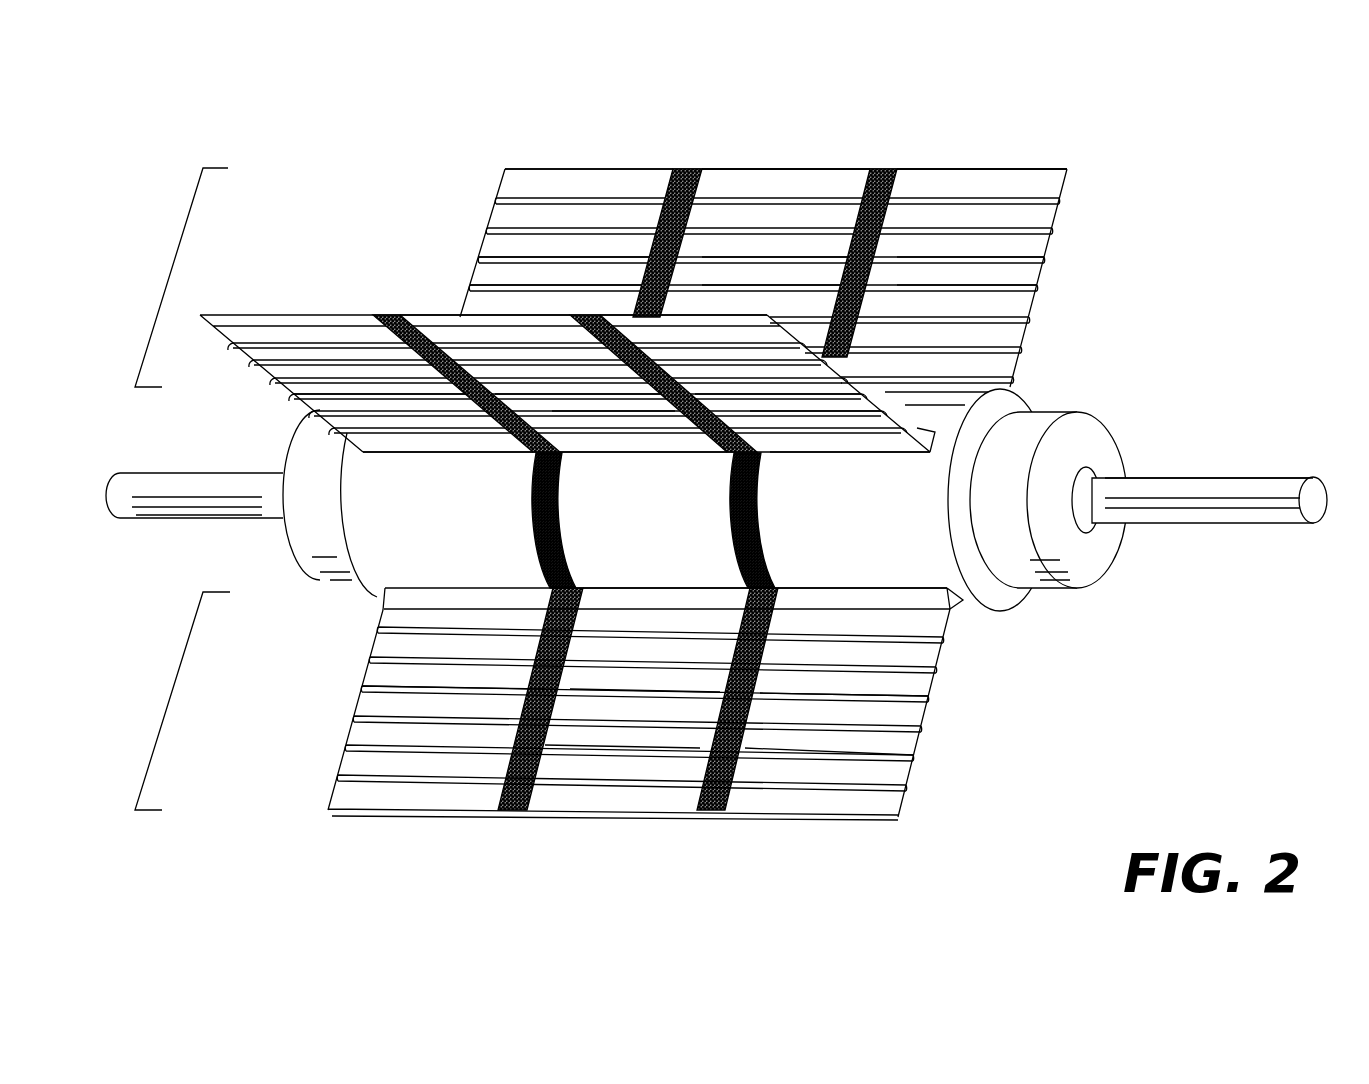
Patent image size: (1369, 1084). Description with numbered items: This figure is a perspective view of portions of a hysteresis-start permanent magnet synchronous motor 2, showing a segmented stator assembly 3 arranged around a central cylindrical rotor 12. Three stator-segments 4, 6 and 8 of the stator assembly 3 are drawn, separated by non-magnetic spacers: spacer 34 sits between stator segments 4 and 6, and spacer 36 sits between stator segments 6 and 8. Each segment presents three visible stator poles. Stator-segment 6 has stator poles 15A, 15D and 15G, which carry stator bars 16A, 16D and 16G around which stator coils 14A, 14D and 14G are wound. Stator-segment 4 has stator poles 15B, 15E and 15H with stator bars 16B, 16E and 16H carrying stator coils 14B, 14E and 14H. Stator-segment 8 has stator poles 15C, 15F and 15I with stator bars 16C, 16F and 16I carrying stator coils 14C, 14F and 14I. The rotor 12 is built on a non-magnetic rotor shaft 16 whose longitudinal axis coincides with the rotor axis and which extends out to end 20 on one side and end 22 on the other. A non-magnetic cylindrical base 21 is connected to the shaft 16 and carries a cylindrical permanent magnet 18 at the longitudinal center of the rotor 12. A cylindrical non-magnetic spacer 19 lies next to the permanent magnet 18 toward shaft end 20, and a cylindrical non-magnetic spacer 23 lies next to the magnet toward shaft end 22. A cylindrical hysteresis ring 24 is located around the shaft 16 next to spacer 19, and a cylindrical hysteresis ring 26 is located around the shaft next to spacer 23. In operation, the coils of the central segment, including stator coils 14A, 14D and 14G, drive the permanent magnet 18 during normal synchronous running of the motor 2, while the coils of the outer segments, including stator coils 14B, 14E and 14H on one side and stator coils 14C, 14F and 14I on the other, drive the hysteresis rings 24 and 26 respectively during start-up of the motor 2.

The hysteresis-start permanent magnet synchronous motor 2 is at (697, 503).
The segmented stator assembly 3 is at (170, 270).
The stator-segment 4 is at (598, 168).
The stator-segment 6 is at (832, 168).
The stator-segment 8 is at (1045, 168).
The rotor 12 is at (697, 485).
The stator coil 14A is at (793, 258).
The stator coil 14B is at (573, 258).
The stator coil 14C is at (1012, 255).
The stator coil 14D is at (597, 660).
The stator coil 14E is at (392, 659).
The stator coil 14F is at (790, 670).
The stator coil 14G is at (600, 390).
The stator coil 14H is at (347, 392).
The stator coil 14I is at (747, 388).
The stator pole 15A is at (798, 168).
The stator pole 15B is at (540, 168).
The stator pole 15C is at (1012, 168).
The stator pole 15D is at (612, 818).
The stator pole 15E is at (415, 818).
The stator pole 15F is at (862, 818).
The stator pole 15G is at (512, 309).
The stator pole 15H is at (247, 310).
The stator pole 15I is at (730, 309).
The rotor shaft 16 is at (1193, 532).
The stator bar 16A is at (768, 273).
The stator bar 16B is at (562, 273).
The stator bar 16C is at (960, 273).
The stator bar 16D is at (622, 760).
The stator bar 16E is at (640, 709).
The stator bar 16F is at (829, 767).
The stator bar 16G is at (679, 470).
The stator bar 16H is at (290, 408).
The stator bar 16I is at (877, 470).
The permanent magnet 18 is at (615, 511).
The non-magnetic spacer 19 is at (537, 543).
The end of rotor shaft 20 is at (110, 488).
The non-magnetic cylindrical base 21 is at (1103, 412).
The end of rotor shaft 22 is at (1318, 502).
The non-magnetic spacer 23 is at (740, 572).
The hysteresis ring 24 is at (400, 511).
The hysteresis ring 26 is at (810, 511).
The non-magnetic spacer 34 is at (688, 168).
The non-magnetic spacer 36 is at (890, 168).